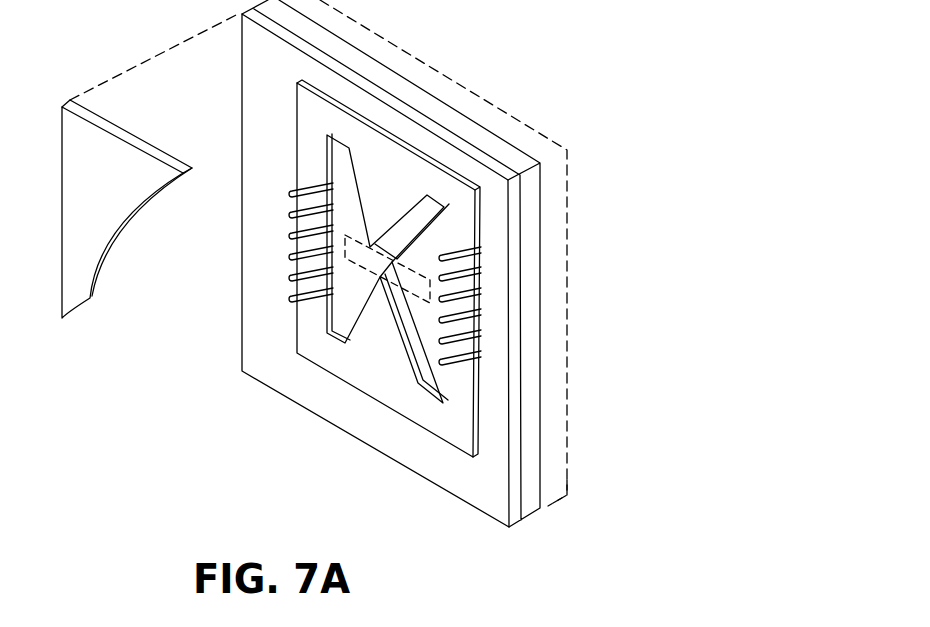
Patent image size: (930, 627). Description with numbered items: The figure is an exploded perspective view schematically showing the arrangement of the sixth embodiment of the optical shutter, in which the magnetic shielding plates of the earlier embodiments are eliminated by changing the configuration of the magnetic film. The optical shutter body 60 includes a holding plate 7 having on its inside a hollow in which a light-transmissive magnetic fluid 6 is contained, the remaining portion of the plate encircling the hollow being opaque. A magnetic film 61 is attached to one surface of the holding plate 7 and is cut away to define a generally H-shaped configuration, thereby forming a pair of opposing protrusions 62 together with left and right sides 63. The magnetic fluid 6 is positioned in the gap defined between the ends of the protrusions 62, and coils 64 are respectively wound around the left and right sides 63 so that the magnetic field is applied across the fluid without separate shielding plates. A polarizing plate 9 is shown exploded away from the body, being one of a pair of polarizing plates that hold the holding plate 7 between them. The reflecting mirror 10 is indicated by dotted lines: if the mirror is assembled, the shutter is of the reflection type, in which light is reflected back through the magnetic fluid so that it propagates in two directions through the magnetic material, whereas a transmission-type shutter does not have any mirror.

The magnetic fluid 6 is at (430, 290).
The holding plate 7 is at (384, 440).
The polarizing plate 9 is at (528, 517).
The reflecting mirror 10 is at (550, 505).
The optical shutter body 60 is at (478, 90).
The magnetic film 61 is at (318, 353).
The protrusions 62 is at (385, 236).
The left and right sides 63 is at (300, 152).
The coils 64 is at (317, 293).